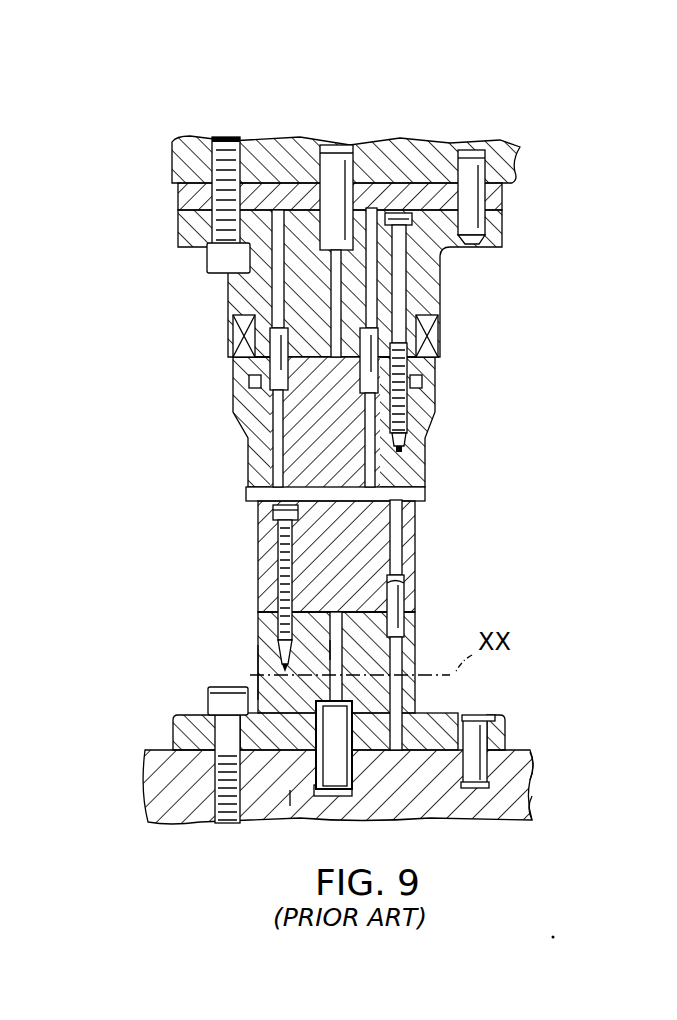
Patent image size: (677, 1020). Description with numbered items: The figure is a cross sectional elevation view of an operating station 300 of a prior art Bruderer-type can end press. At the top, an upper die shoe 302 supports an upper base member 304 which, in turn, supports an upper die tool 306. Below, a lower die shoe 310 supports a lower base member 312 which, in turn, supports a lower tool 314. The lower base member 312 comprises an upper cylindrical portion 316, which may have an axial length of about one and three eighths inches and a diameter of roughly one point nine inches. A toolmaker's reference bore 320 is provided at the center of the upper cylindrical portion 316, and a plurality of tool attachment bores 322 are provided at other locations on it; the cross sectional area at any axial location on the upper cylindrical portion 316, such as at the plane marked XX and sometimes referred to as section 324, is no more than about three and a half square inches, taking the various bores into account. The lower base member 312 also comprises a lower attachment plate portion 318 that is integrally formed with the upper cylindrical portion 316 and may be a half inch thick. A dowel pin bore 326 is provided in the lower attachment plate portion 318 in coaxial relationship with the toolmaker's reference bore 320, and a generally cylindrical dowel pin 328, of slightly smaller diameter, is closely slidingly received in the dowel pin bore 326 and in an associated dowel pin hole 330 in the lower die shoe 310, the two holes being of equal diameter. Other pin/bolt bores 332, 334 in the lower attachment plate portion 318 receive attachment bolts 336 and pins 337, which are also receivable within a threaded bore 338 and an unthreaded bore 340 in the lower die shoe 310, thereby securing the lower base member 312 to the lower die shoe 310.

The prior art press tooling assembly 300 is at (588, 306).
The upper die shoe 302 is at (532, 158).
The upper base member 304 is at (458, 282).
The upper die tool 306 is at (440, 430).
The lower die shoe 310 is at (562, 786).
The lower base member 312 is at (442, 684).
The lower tool 314 is at (440, 557).
The upper cylindrical portion 316 is at (272, 644).
The lower attachment plate portion 318 is at (490, 743).
The toolmaker's reference bore 320 is at (396, 660).
The tool attachment bores 322 is at (285, 624).
The bore 324 is at (340, 650).
The dowel pin bore 326 is at (318, 706).
The dowel pin 328 is at (338, 722).
The dowel pin hole 330 is at (290, 806).
The pin/bolt bore 332 is at (500, 717).
The pin/bolt bore 334 is at (195, 731).
The attachment bolts 336 is at (208, 699).
The pins 337 is at (530, 768).
The threaded bore 338 is at (222, 821).
The unthreaded bore 340 is at (534, 800).